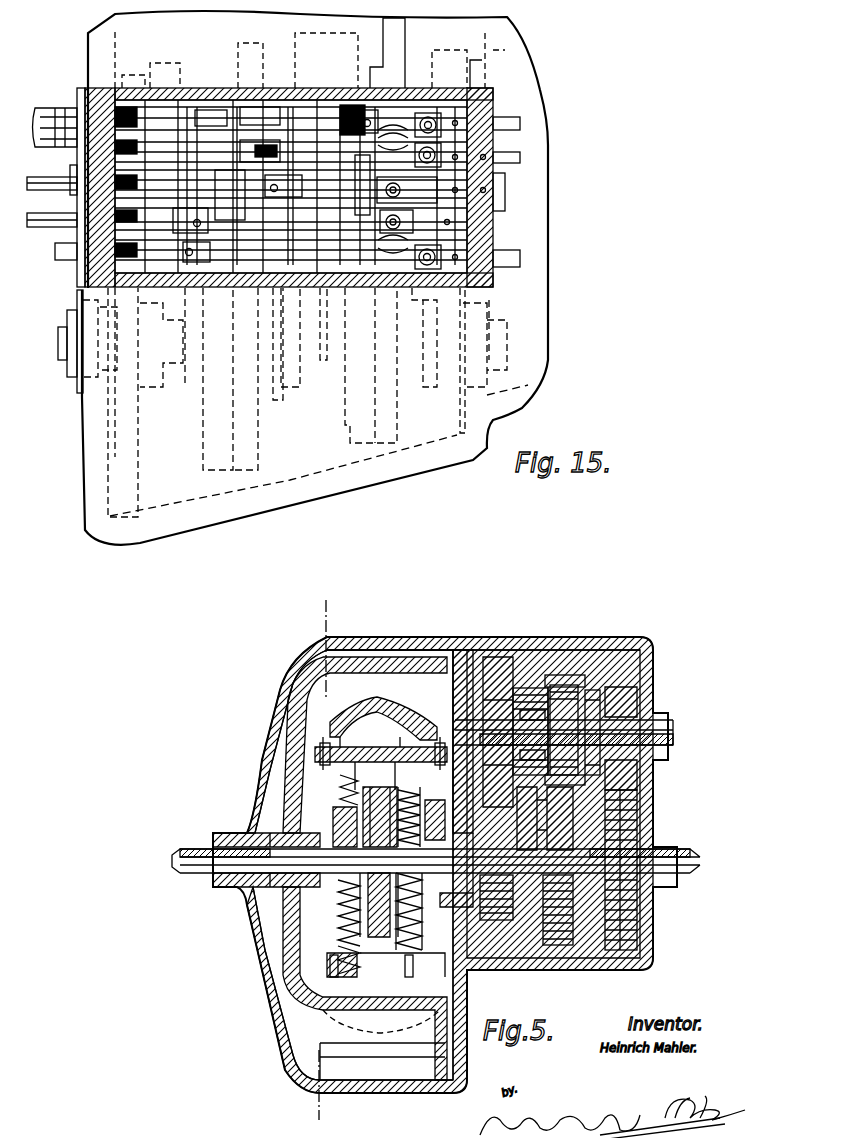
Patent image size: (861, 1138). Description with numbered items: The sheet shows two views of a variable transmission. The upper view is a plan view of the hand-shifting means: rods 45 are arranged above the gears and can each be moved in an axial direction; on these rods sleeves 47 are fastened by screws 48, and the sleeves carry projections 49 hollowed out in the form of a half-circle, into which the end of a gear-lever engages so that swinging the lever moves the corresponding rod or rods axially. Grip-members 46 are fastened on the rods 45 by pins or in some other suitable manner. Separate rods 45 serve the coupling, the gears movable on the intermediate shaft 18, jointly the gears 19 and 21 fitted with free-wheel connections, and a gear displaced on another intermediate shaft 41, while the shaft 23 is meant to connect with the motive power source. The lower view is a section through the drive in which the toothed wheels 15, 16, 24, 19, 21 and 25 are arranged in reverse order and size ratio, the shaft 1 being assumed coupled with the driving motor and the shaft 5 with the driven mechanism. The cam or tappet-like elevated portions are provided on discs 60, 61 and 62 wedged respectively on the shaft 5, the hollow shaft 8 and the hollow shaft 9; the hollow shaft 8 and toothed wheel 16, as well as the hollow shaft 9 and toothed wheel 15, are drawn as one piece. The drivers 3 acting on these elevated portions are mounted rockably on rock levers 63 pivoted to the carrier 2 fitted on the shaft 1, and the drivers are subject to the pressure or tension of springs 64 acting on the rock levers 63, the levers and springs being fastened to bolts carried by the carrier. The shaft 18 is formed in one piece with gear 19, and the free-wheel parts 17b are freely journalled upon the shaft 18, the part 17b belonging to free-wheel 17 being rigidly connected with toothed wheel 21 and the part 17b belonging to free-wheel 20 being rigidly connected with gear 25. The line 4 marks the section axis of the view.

In FIG. 5, the shaft 1 is at (190, 856).
In FIG. 5, the carrier 2 is at (296, 663).
In FIG. 5, the driver 3 is at (343, 777).
In FIG. 5, the axis line 4 is at (322, 860).
In FIG. 5, the shaft 5 is at (690, 860).
In FIG. 5, the hollow shaft 8 is at (519, 845).
In FIG. 5, the hollow shaft 9 is at (437, 835).
In FIG. 5, the toothed wheel 15 is at (494, 921).
In FIG. 5, the toothed wheel 16 is at (556, 946).
In FIG. 5, the free-wheel 17 is at (520, 700).
In FIG. 5, the free-wheel part 17b is at (556, 690).
In FIG. 15, the intermediate shaft 18 is at (60, 348).
In FIG. 5, the intermediate shaft 18 is at (668, 735).
In FIG. 5, the gear 19 is at (498, 658).
In FIG. 5, the free-wheel 20 is at (590, 695).
In FIG. 5, the toothed wheel 21 is at (312, 975).
In FIG. 15, the shaft 23 is at (42, 113).
In FIG. 5, the toothed wheel 24 is at (640, 797).
In FIG. 5, the gear 25 is at (639, 701).
In FIG. 15, the intermediate shaft 41 is at (72, 171).
In FIG. 15, the rod 45 is at (78, 104).
In FIG. 15, the grip-member 46 is at (178, 270).
In FIG. 15, the sleeve 47 is at (443, 112).
In FIG. 15, the screw 48 is at (424, 112).
In FIG. 15, the projection 49 is at (395, 105).
In FIG. 5, the disc 60 is at (344, 816).
In FIG. 5, the disc 61 is at (350, 909).
In FIG. 5, the disc 62 is at (430, 791).
In FIG. 5, the rock lever 63 is at (358, 715).
In FIG. 5, the spring 64 is at (350, 934).